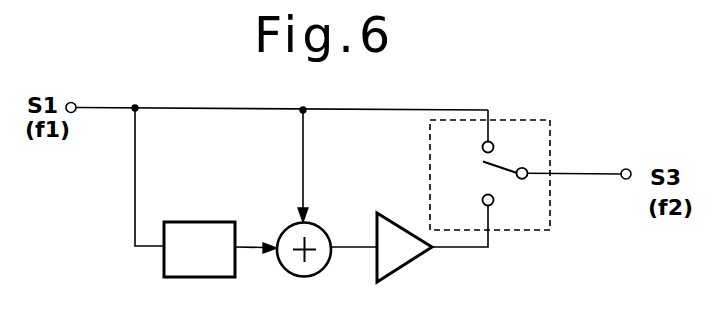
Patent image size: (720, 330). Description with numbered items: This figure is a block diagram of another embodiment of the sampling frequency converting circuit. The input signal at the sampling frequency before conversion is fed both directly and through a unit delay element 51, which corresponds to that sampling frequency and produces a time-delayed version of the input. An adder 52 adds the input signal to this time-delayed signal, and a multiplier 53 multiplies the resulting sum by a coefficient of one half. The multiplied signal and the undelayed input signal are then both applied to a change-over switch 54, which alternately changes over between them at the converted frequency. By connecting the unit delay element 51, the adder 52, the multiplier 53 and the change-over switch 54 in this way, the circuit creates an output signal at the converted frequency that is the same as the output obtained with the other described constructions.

The unit delay element 51 is at (202, 278).
The adder 52 is at (303, 277).
The multiplier 53 is at (402, 265).
The change-over switch 54 is at (530, 231).